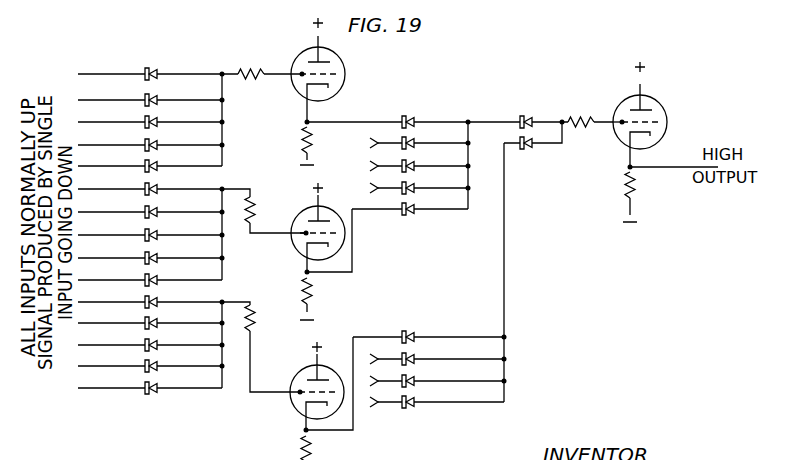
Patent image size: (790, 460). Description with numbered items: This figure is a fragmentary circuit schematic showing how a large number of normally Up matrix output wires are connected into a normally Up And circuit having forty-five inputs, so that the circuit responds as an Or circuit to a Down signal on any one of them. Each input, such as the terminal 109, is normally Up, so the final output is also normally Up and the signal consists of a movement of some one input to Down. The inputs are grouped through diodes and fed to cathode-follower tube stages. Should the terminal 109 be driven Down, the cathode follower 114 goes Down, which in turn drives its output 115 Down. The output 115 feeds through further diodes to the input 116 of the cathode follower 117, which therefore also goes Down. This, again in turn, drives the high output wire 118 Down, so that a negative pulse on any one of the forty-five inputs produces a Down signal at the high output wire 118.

The input terminal 109 is at (116, 54).
The cathode follower 114 is at (343, 62).
The output 115 is at (344, 121).
The input 116 is at (563, 121).
The cathode follower 117 is at (655, 104).
The high output wire 118 is at (655, 168).